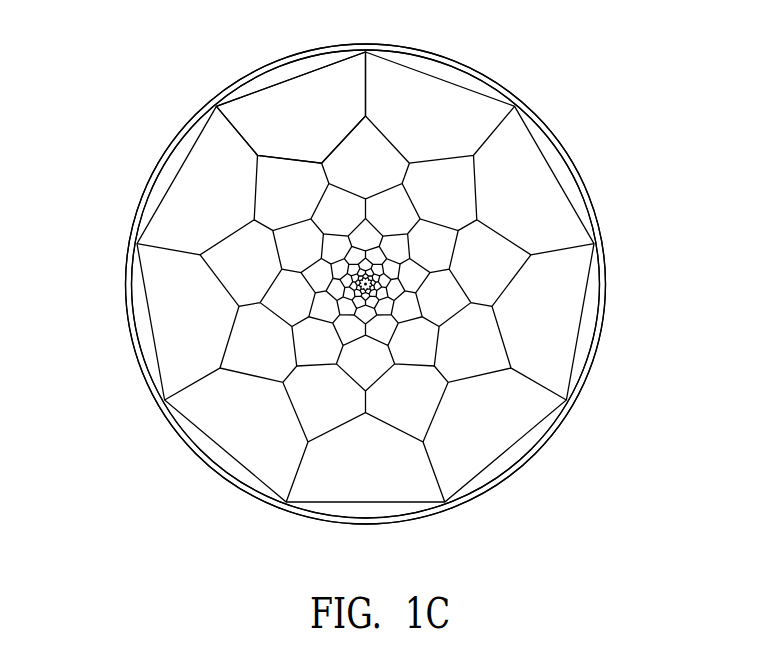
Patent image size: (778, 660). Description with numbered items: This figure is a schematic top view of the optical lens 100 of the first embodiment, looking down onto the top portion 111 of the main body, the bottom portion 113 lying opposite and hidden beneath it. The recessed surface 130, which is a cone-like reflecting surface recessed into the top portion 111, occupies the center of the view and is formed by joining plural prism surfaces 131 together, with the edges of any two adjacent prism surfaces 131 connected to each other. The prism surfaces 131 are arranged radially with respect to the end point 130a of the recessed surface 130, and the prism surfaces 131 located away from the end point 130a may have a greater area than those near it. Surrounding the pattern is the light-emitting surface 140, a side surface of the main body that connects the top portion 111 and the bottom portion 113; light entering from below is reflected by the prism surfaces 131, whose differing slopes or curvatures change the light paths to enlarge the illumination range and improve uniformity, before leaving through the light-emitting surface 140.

The optical lens 100 is at (72, 88).
The top portion 111 is at (580, 185).
The bottom portion 113 is at (532, 465).
The recessed surface 130 is at (437, 183).
The end point 130a is at (365, 283).
The prism surfaces 131 is at (358, 150).
The light-emitting surface 140 is at (598, 337).